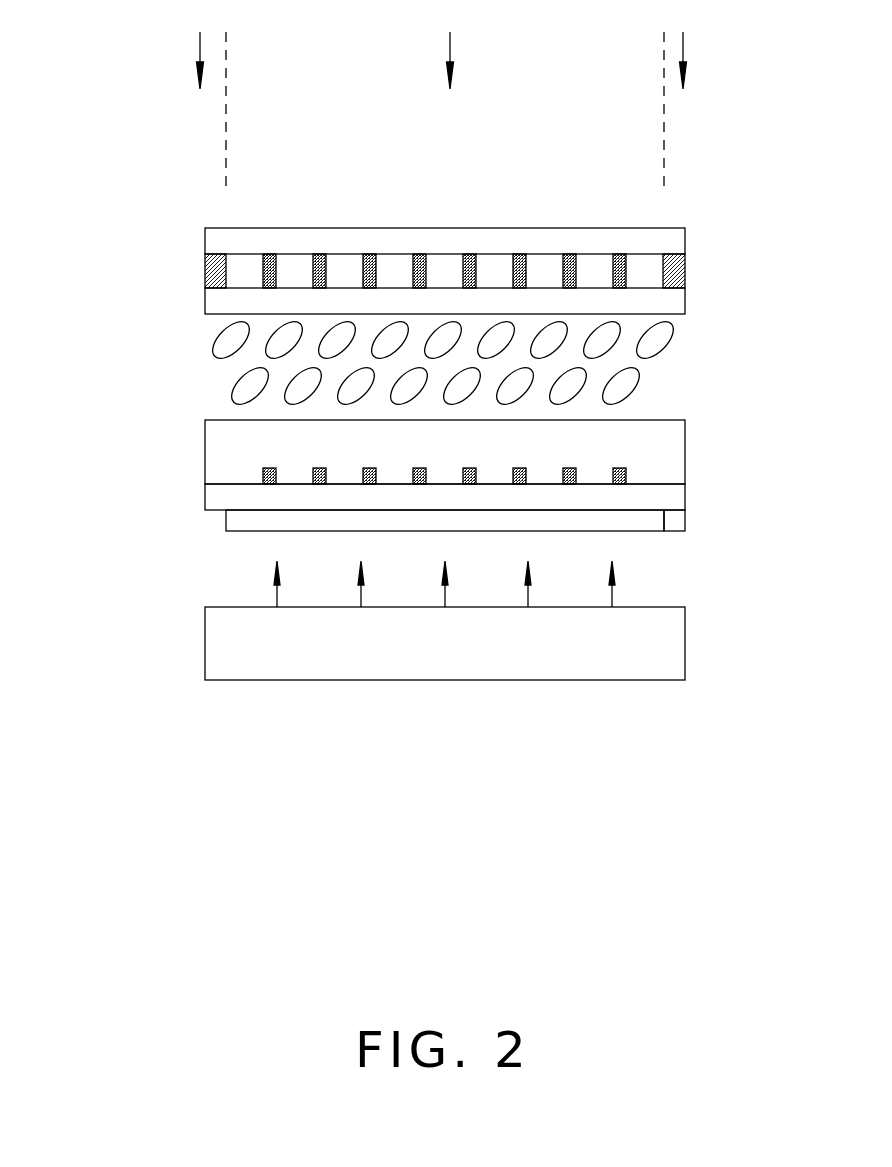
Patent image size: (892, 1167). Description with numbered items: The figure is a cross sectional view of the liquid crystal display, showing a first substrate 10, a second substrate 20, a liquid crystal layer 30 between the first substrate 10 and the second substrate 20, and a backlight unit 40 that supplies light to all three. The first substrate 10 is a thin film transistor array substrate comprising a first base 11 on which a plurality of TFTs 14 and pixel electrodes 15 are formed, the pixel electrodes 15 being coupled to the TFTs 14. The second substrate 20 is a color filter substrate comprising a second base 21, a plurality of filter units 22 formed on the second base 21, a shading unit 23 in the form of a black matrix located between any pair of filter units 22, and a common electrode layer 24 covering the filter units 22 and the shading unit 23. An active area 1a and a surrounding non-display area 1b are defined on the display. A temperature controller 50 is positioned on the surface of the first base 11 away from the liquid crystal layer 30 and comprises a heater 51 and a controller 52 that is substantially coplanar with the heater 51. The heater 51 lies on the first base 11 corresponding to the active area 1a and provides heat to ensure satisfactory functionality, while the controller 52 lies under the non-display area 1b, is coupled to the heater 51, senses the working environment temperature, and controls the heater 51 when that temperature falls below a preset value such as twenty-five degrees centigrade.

The active area 1a is at (448, 49).
The non-display area 1b is at (441, 100).
The first substrate 10 is at (152, 475).
The first base 11 is at (659, 501).
The TFTs 14 is at (575, 468).
The pixel electrodes 15 is at (660, 449).
The second substrate 20 is at (142, 282).
The second base 21 is at (668, 238).
The filter units 22 is at (493, 259).
The shading unit 23 is at (575, 253).
The common electrode layer 24 is at (663, 303).
The liquid crystal layer 30 is at (150, 379).
The backlight unit 40 is at (642, 670).
The temperature controller 50 is at (744, 531).
The heater 51 is at (645, 524).
The controller 52 is at (676, 527).